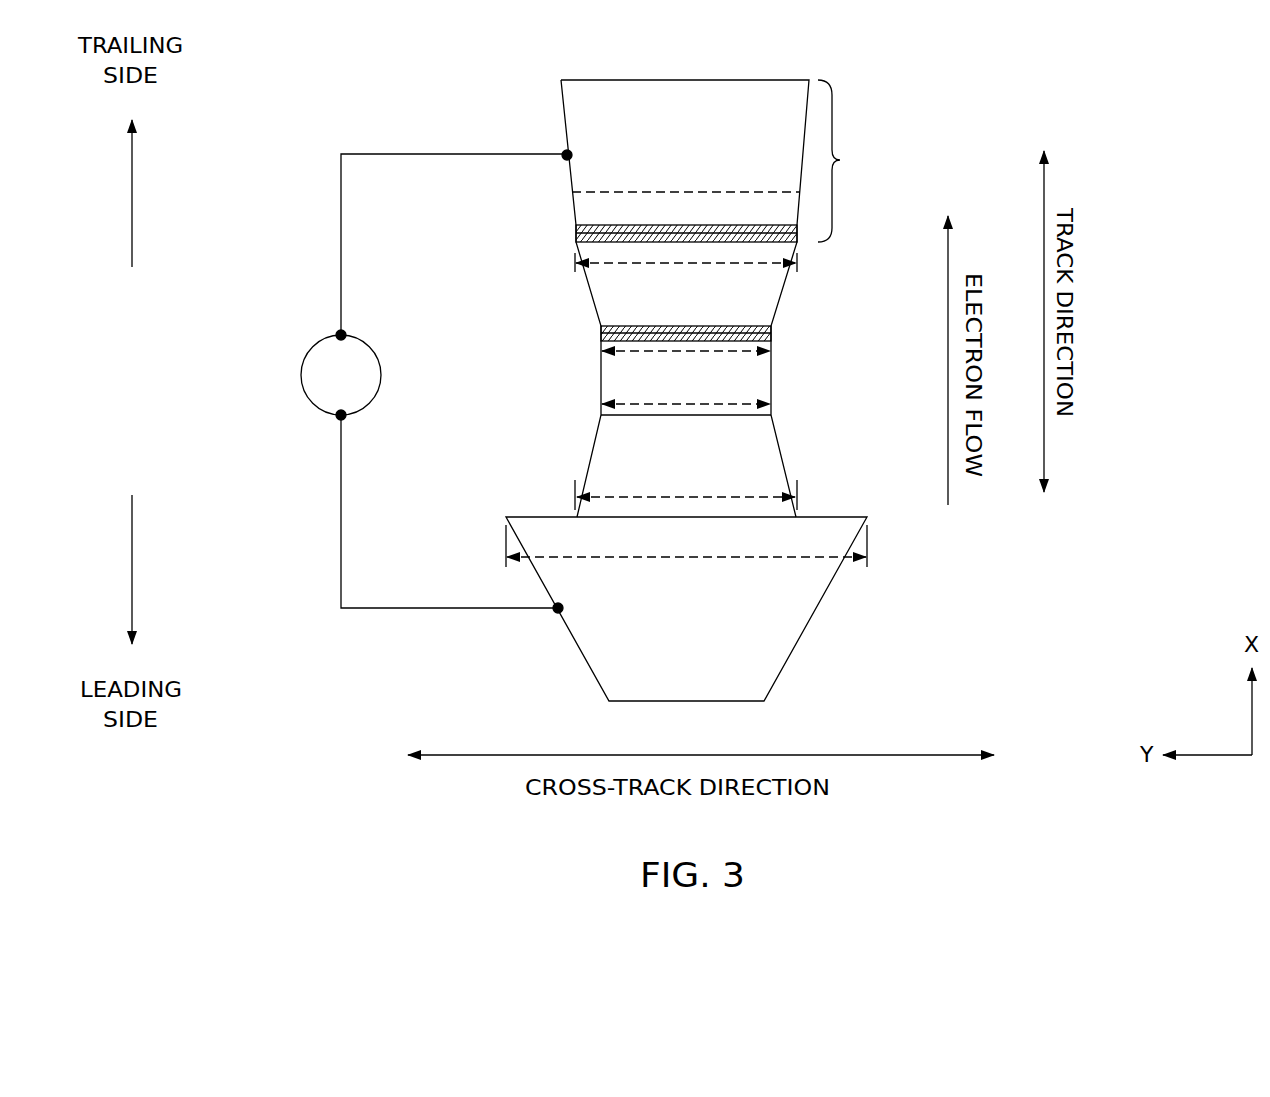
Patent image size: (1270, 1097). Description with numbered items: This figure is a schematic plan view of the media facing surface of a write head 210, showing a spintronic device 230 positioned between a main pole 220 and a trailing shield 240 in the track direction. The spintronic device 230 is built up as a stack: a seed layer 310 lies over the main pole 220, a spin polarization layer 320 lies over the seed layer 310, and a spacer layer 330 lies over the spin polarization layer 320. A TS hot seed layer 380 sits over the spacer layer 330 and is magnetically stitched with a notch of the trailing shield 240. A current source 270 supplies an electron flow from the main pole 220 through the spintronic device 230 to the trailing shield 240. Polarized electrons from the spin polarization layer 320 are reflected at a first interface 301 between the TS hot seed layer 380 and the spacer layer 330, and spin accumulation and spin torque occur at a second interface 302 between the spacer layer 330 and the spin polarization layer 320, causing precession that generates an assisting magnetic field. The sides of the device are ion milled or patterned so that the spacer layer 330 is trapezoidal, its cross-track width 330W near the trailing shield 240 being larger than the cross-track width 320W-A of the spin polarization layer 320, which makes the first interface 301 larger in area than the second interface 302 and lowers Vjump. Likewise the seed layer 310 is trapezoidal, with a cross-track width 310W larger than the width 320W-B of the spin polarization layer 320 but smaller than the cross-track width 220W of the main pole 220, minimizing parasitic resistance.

The write head 210 is at (406, 680).
The main pole 220 is at (710, 640).
The cross-track width of the main pole 220W is at (573, 557).
The spintronic device 230 is at (506, 300).
The trailing shield 240 is at (834, 160).
The current source 270 is at (303, 368).
The first interface 301 is at (791, 226).
The second interface 302 is at (772, 328).
The seed layer 310 is at (710, 485).
The cross-track width of the seed layer 310W is at (637, 497).
The spin polarization layer 320 is at (740, 387).
The cross-track width of the SPL proximate the spacer layer 320W-A is at (640, 351).
The cross-track width of the SPL proximate the seed layer 320W-B is at (650, 404).
The spacer layer 330 is at (742, 300).
The cross-track width of the spacer layer 330W is at (640, 262).
The TS hot seed layer 380 is at (768, 221).